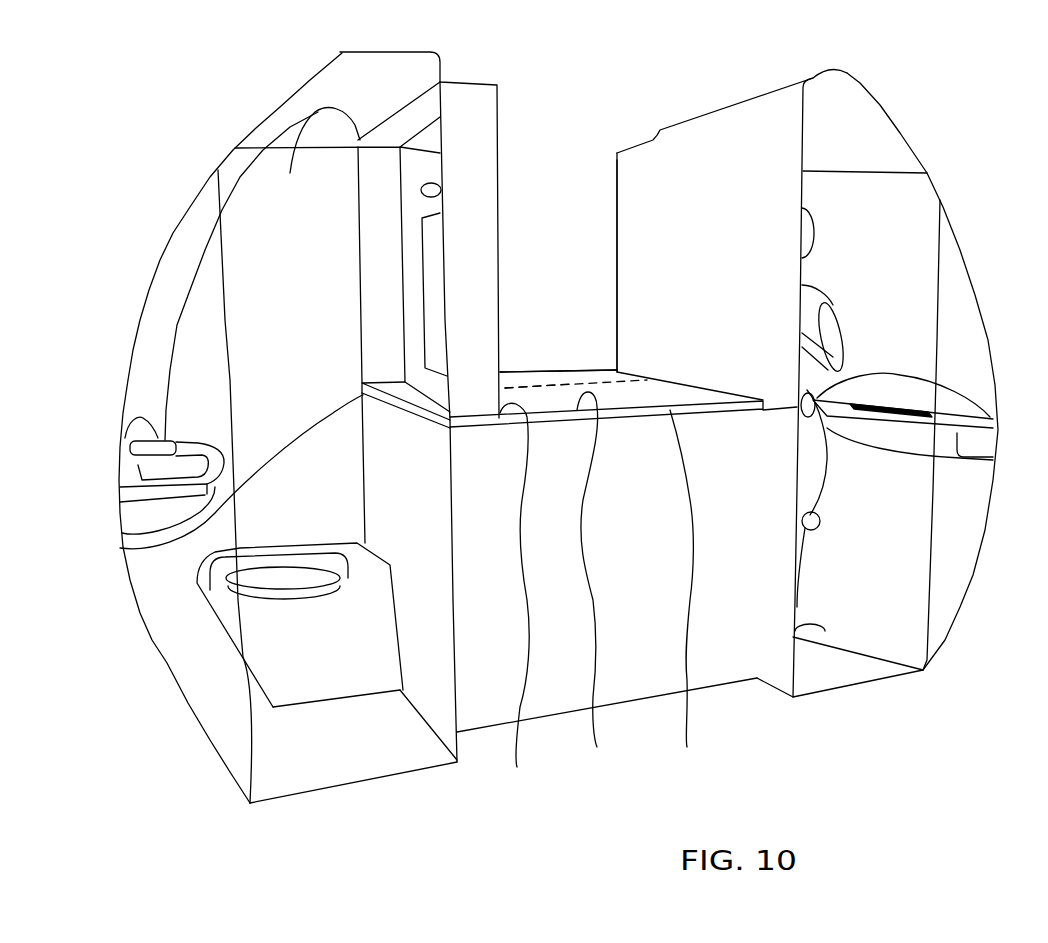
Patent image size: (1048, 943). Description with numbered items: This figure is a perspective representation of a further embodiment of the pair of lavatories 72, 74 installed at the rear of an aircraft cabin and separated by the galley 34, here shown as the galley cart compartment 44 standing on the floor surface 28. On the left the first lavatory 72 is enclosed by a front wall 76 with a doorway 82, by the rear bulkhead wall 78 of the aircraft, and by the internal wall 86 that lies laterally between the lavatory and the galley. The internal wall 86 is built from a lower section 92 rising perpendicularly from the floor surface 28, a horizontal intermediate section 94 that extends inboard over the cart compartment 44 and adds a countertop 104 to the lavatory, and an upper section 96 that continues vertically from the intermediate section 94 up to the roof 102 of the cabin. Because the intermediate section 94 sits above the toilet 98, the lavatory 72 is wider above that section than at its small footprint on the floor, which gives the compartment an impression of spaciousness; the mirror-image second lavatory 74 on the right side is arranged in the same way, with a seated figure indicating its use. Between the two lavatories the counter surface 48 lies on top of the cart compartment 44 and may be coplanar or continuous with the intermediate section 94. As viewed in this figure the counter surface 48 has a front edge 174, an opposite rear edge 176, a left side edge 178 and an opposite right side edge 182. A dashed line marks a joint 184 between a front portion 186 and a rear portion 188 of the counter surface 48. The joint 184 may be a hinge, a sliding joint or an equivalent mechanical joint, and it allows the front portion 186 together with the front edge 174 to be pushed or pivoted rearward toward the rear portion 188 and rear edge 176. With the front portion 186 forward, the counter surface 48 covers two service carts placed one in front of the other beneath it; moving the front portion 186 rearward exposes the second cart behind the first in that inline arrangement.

The floor surface 28 is at (403, 765).
The galley 34 is at (587, 137).
The galley cart compartment 44 is at (757, 712).
The counter surface 48 is at (563, 378).
The first lavatory 72 is at (262, 195).
The second lavatory 74 is at (913, 220).
The front wall 76 is at (190, 344).
The rear bulkhead wall 78 is at (305, 100).
The doorway 82 is at (217, 238).
The internal wall 86 is at (437, 722).
The lower section 92 is at (423, 705).
The intermediate section 94 is at (427, 398).
The upper section 96 is at (410, 342).
The toilet 98 is at (272, 574).
The roof 102 is at (385, 73).
The countertop 104 is at (122, 533).
The front edge 174 is at (687, 747).
The rear edge 176 is at (515, 375).
The left side edge 178 is at (517, 767).
The right side edge 182 is at (702, 378).
The joint 184 is at (605, 380).
The front portion 186 is at (597, 747).
The rear portion 188 is at (530, 380).